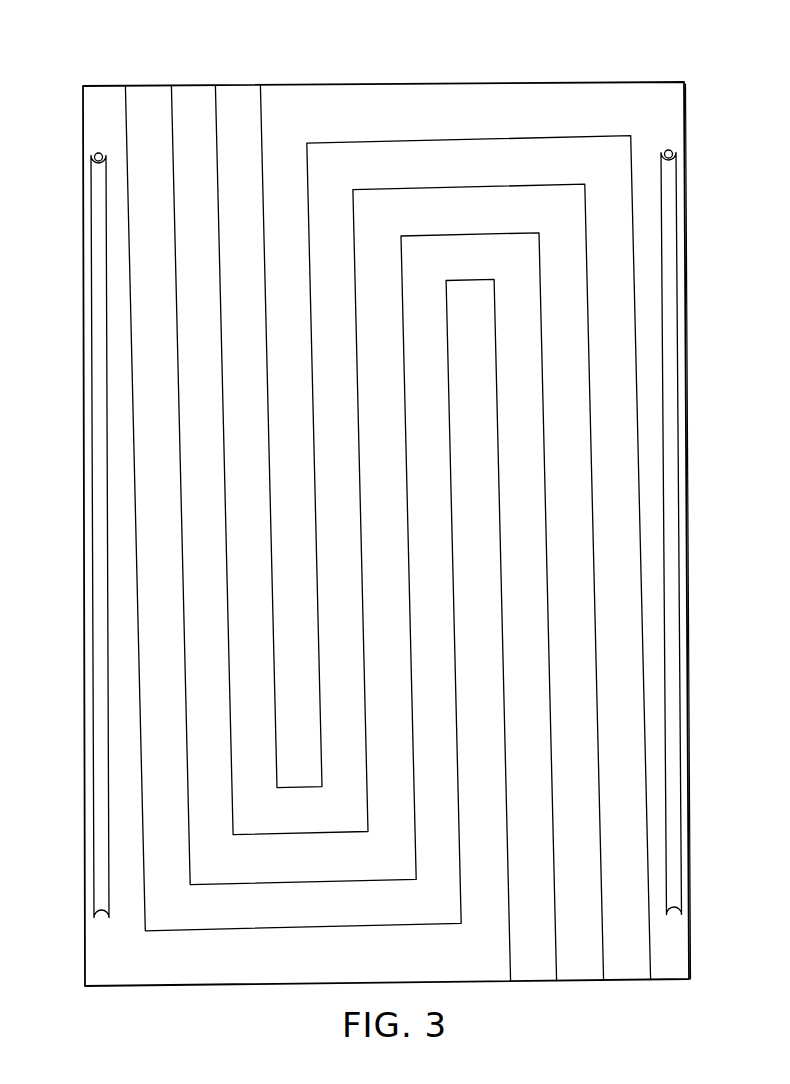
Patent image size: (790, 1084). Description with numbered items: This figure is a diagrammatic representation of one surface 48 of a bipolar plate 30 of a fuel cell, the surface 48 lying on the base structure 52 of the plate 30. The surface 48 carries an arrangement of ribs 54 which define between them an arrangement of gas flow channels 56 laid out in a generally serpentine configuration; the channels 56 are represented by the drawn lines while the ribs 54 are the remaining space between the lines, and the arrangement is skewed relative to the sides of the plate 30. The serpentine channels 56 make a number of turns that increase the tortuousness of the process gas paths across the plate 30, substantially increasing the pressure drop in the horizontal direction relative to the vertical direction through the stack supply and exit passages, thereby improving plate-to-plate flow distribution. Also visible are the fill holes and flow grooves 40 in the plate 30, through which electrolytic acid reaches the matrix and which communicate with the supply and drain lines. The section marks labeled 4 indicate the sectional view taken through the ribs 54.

The bipolar plate 30 is at (651, 66).
The fill holes and flow grooves 40 is at (100, 445).
The surface 48 is at (656, 120).
The base structure 52 is at (689, 360).
The ribs 54 is at (210, 732).
The gas flow channels 56 is at (227, 602).
The section line 4- 4 is at (259, 359).